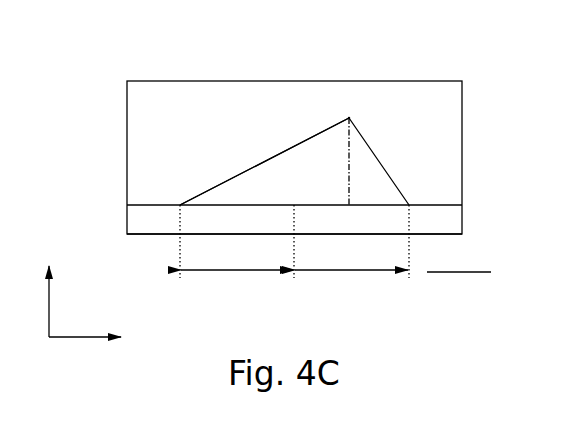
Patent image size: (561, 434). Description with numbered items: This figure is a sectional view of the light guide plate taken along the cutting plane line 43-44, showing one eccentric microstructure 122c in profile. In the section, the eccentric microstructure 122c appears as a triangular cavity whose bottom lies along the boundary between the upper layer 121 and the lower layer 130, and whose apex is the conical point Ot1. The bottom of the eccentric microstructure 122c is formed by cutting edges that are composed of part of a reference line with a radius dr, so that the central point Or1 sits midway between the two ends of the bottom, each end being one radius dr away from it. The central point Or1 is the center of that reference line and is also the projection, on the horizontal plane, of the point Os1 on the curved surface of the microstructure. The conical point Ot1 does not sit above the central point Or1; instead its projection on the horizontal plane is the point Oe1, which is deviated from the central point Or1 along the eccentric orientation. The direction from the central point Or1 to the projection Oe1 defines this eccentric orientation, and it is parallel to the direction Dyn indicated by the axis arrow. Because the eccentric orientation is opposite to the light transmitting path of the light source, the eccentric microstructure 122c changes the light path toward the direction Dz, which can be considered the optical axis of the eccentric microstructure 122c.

The first layer 121 is at (140, 180).
The eccentric microstructure 122c is at (178, 148).
The substrate layer 130 is at (140, 228).
The point of the curved surface Os1 is at (312, 148).
The conical point Ot1 is at (349, 118).
The central point Or1 is at (289, 206).
The projection of the conical point Oe1 is at (344, 206).
The radius dr is at (294, 286).
The cutting plane line 43-44 is at (459, 258).
The direction Dz is at (47, 286).
The direction Dyn is at (110, 335).